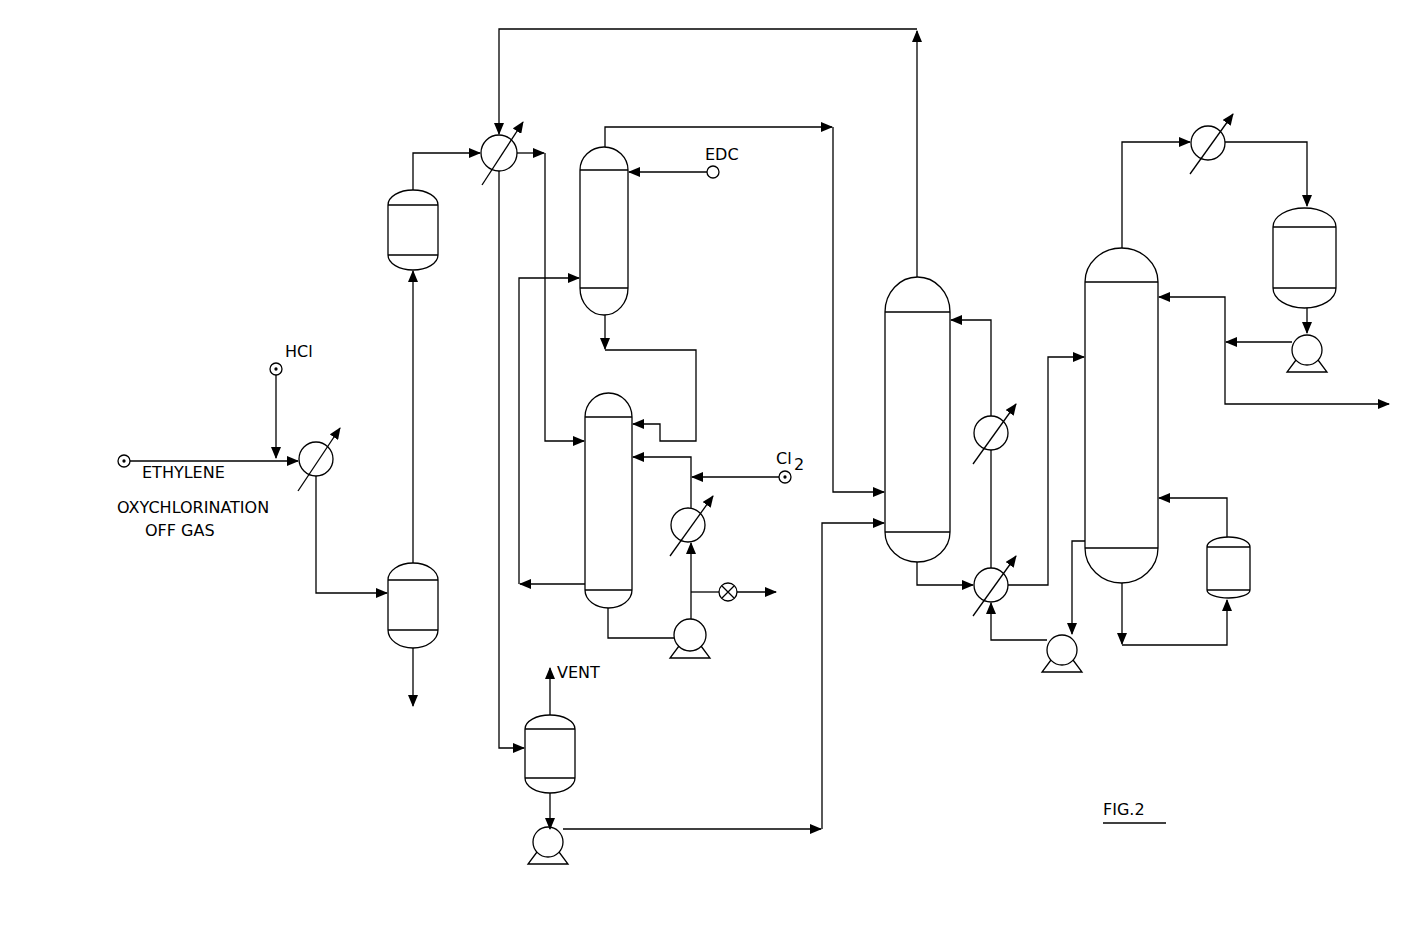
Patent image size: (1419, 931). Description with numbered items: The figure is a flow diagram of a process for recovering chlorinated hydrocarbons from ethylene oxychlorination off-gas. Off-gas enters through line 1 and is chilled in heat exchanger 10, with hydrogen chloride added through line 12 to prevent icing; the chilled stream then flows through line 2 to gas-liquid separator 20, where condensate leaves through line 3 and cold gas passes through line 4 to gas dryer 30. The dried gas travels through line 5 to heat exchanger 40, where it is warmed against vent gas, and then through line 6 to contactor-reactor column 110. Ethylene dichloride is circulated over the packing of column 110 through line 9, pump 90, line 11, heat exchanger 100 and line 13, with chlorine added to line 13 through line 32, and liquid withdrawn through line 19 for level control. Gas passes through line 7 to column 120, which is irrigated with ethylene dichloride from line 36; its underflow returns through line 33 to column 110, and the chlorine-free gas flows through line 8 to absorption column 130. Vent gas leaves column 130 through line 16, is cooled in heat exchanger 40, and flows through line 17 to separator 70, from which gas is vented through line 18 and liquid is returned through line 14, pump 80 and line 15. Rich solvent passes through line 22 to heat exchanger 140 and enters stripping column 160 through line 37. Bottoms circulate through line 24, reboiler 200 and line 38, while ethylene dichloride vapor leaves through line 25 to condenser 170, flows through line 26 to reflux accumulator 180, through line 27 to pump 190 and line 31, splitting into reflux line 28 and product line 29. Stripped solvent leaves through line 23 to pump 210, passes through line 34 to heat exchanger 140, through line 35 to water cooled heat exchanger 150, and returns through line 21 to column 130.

The line 1 is at (204, 458).
The line from heat exchanger 10 to vessel 20 2 is at (316, 510).
The line 3 is at (413, 670).
The line 4 is at (413, 440).
The line 5 is at (413, 172).
The line 6 is at (545, 160).
The line 7 is at (519, 460).
The line 8 is at (743, 124).
The line 9 is at (652, 638).
The heat exchanger 10 is at (326, 468).
The line 11 is at (691, 560).
The line 12 is at (276, 392).
The line 13 is at (662, 462).
The line 14 is at (550, 803).
The line 15 is at (822, 716).
The line 16 is at (919, 138).
The line from heat exchanger 40 to vessel 70 17 is at (499, 345).
The line 18 is at (550, 690).
The line 19 is at (760, 592).
The gas-liquid separator 20 is at (425, 614).
The line 21 is at (991, 325).
The line 22 is at (950, 585).
The line 23 is at (1072, 583).
The line 24 is at (1196, 644).
The line 25 is at (1122, 195).
The line 26 is at (1280, 142).
The line 27 is at (1307, 320).
The line 28 is at (1212, 297).
The line 29 is at (1322, 404).
The gas dryer 30 is at (425, 239).
The line 31 is at (1264, 342).
The line 32 is at (752, 475).
The line 33 is at (672, 350).
The line 34 is at (1020, 640).
The line 35 is at (991, 488).
The line 36 is at (650, 172).
The line 37 is at (1048, 400).
The line 38 is at (1227, 522).
The heat exchanger 40 is at (510, 162).
The separator 70 is at (562, 763).
The pump 80 is at (558, 851).
The pump 90 is at (700, 644).
The heat exchanger 100 is at (700, 534).
The contactor-reactor column 110 is at (624, 515).
The column 120 is at (620, 235).
The absorption column 130 is at (934, 440).
The heat exchanger 140 is at (1003, 594).
The water cooled heat exchanger 150 is at (1003, 442).
The stripping column 160 is at (1138, 421).
The condenser 170 is at (1220, 152).
The reflux accumulator 180 is at (1322, 267).
The pump 190 is at (1319, 359).
The heat exchanger reboiler 200 is at (1246, 577).
The pump 210 is at (1074, 659).